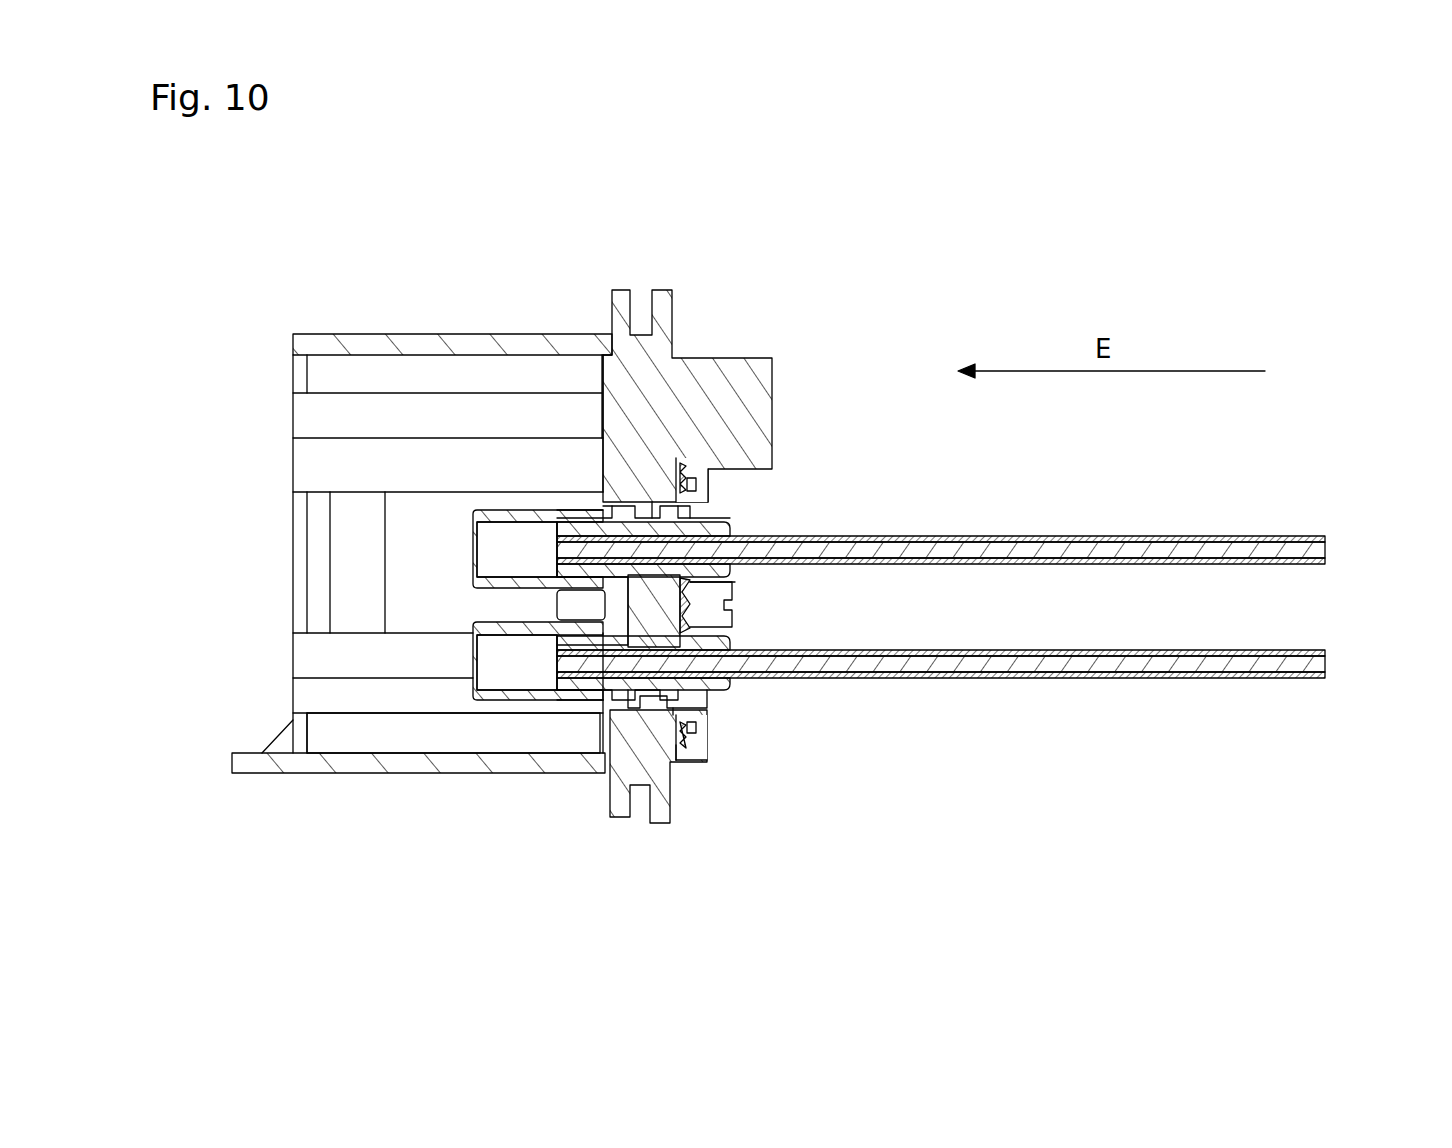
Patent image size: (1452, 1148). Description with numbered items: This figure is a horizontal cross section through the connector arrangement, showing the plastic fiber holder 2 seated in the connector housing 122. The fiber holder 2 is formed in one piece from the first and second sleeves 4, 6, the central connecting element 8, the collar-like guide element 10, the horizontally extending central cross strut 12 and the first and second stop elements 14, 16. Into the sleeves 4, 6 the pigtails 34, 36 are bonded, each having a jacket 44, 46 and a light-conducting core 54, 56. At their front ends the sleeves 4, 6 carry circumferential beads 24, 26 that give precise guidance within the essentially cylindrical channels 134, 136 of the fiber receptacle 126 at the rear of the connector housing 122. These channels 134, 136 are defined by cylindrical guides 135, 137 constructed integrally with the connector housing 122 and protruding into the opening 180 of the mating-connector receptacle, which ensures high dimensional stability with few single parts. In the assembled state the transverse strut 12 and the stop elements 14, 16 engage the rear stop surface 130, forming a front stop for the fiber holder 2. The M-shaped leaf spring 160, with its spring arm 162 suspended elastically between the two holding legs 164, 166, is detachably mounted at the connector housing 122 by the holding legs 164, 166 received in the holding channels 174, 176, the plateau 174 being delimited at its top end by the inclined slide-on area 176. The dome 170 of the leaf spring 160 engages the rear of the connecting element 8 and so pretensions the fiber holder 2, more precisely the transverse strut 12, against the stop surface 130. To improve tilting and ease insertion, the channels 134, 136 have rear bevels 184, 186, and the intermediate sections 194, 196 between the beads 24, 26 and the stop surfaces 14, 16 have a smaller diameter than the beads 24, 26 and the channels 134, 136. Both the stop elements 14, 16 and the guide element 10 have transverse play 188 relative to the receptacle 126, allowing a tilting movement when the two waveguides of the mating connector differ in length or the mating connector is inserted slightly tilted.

The fiber holder 2 is at (735, 683).
The first sleeve 4 is at (645, 505).
The second sleeve 6 is at (647, 715).
The central connecting element 8 is at (705, 628).
The collar-like guide element 10 is at (690, 519).
The central cross strut 12 is at (655, 597).
The first stop element 14 is at (638, 505).
The second stop element 16 is at (640, 702).
The circumferential bead 24 is at (568, 520).
The circumferential bead 26 is at (566, 690).
The pigtail 34 is at (1028, 535).
The pigtail 36 is at (1015, 681).
The jacket 44 is at (1327, 539).
The jacket 46 is at (1327, 653).
The light-conducting core 54 is at (1327, 561).
The light-conducting core 56 is at (1327, 676).
The connector housing 122 is at (402, 775).
The fiber receptacle 126 is at (690, 700).
The rear stop surface 130 is at (605, 607).
The channel 134 is at (505, 551).
The cylindrical guide 135 is at (523, 516).
The channel 136 is at (495, 663).
The cylindrical guide 137 is at (503, 703).
The M-shaped leaf spring 160 is at (688, 738).
The spring arm 162 is at (700, 596).
The holding leg 164 is at (688, 466).
The holding leg 166 is at (678, 744).
The dome 170 is at (692, 606).
The plateau 174 is at (697, 484).
The slide-on area 176 is at (697, 727).
The opening of the mating-connector receptacle 180 is at (353, 601).
The rear bevel 184 is at (580, 520).
The rear bevel 186 is at (612, 700).
The transverse play 188 is at (652, 513).
The intermediate section 194 is at (595, 535).
The intermediate section 196 is at (587, 702).